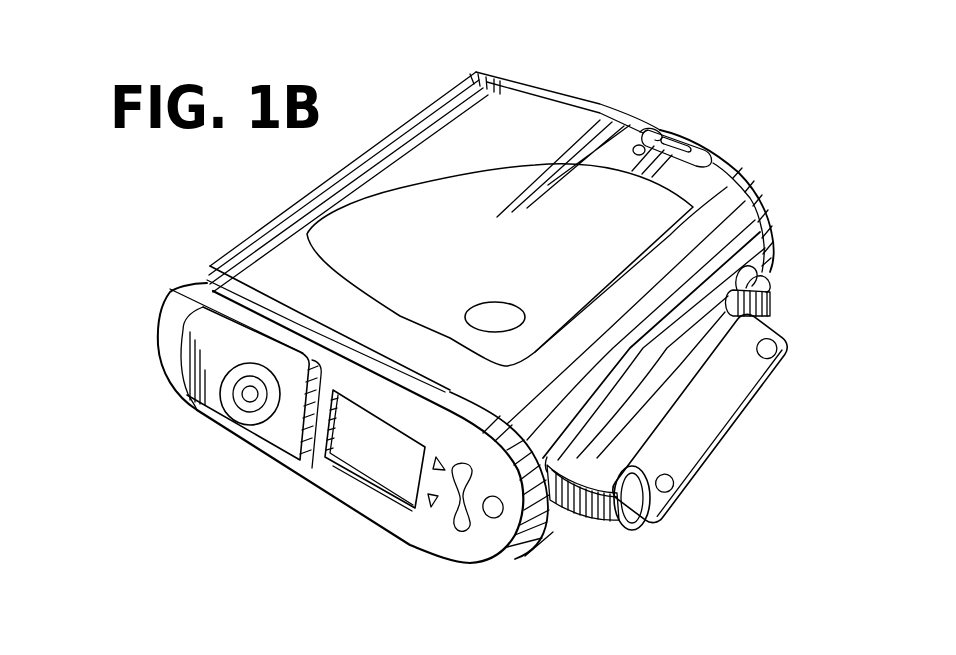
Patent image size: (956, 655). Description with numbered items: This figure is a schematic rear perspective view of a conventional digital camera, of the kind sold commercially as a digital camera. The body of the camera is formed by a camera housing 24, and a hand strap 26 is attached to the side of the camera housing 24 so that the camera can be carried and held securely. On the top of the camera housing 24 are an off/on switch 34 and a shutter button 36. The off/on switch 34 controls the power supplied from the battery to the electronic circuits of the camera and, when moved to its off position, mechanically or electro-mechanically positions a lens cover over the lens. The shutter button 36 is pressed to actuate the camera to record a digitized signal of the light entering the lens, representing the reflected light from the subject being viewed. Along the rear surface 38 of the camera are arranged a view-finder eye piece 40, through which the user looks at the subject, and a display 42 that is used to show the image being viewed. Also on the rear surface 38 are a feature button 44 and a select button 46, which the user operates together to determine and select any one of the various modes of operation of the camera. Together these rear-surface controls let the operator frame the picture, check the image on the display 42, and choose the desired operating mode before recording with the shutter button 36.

The camera housing 24 is at (487, 100).
The hand strap 26 is at (727, 410).
The off/on switch 34 is at (696, 145).
The shutter button 36 is at (493, 312).
The rear surface 38 is at (317, 467).
The view-finder eye piece 40 is at (250, 400).
The display 42 is at (368, 460).
The feature button 44 is at (500, 508).
The select button 46 is at (457, 515).